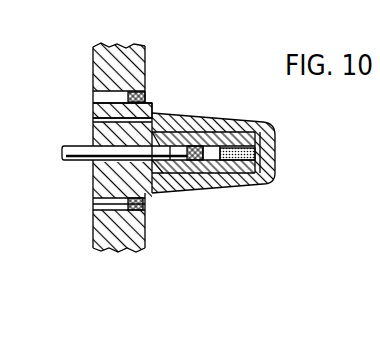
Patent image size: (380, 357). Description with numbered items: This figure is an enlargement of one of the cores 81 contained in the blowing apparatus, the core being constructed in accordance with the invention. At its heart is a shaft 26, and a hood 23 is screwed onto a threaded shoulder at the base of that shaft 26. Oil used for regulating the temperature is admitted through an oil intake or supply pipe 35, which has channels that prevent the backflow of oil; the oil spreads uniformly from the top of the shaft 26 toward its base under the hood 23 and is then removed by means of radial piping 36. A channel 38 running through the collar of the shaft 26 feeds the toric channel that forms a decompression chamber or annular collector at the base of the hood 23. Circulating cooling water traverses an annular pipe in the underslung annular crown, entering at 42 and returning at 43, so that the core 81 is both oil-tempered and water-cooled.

The hood 23 is at (235, 180).
The shaft 26 is at (213, 138).
The oil intake or supply pipe 35 is at (197, 152).
The radial piping 36 is at (104, 161).
The channel 38 is at (94, 108).
The water entry 42 is at (125, 207).
The water return 43 is at (112, 98).
The core 81 is at (274, 156).